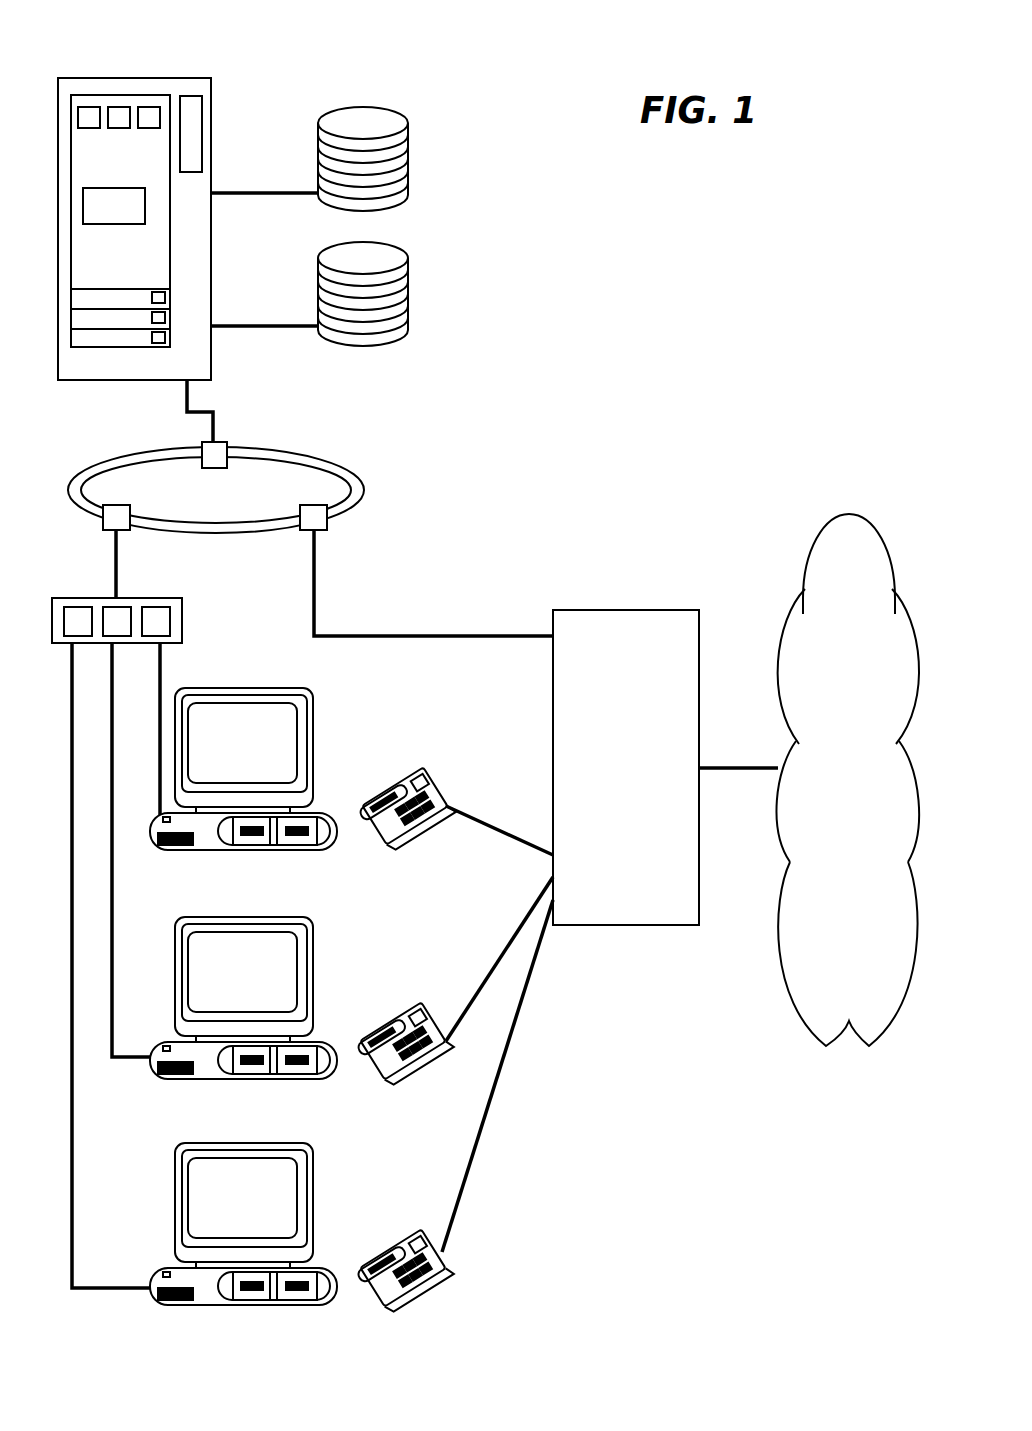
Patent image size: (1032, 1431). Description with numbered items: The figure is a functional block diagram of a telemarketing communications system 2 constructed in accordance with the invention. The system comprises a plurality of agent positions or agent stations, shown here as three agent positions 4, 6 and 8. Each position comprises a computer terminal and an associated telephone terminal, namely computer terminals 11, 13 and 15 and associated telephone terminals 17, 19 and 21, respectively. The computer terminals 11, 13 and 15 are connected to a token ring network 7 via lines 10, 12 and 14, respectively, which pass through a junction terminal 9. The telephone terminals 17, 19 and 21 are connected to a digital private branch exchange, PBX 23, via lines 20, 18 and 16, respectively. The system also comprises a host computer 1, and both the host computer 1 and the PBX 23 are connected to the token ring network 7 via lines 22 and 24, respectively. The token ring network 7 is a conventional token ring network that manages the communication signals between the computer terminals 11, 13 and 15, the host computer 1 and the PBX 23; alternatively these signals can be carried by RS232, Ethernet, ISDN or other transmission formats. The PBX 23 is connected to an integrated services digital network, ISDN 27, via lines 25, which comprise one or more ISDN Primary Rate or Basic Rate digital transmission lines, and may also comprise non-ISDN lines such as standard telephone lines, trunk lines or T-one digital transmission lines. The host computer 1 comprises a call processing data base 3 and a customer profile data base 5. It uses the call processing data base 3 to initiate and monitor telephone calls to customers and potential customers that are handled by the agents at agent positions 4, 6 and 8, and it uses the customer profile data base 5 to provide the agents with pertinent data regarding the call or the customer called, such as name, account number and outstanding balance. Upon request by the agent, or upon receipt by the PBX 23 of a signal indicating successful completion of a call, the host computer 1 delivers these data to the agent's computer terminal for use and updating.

The host computer 1 is at (211, 100).
The telemarketing communications system 2 is at (564, 431).
The call processing data base 3 is at (396, 109).
The agent position 4 is at (344, 757).
The customer profile data base 5 is at (404, 246).
The agent position 6 is at (345, 989).
The token ring network 7 is at (292, 460).
The agent position 8 is at (338, 1217).
The junction terminal 9 is at (182, 620).
The line 10 is at (160, 678).
The computer terminal 11 is at (302, 690).
The line 12 is at (112, 758).
The computer terminal 13 is at (312, 918).
The line 14 is at (72, 928).
The computer terminal 15 is at (312, 1152).
The line 16 is at (507, 1060).
The telephone terminal 17 is at (408, 773).
The line 18 is at (523, 920).
The telephone terminal 19 is at (420, 1004).
The line 20 is at (468, 812).
The telephone terminal 21 is at (430, 1238).
The line 22 is at (213, 428).
The PBX 23 is at (637, 610).
The line 24 is at (315, 582).
The lines 25 is at (720, 768).
The integrated services digital network (ISDN) 27 is at (818, 550).